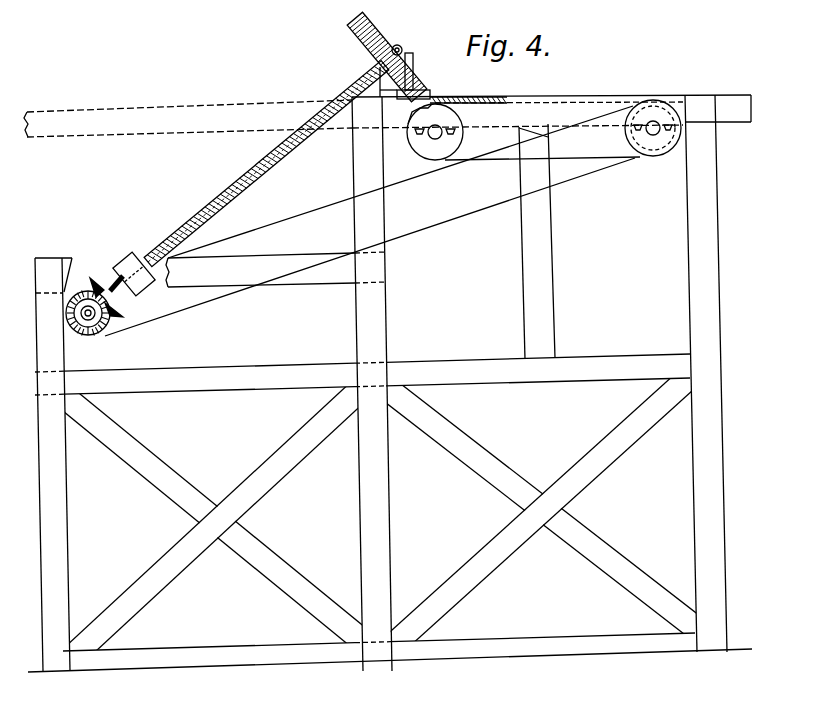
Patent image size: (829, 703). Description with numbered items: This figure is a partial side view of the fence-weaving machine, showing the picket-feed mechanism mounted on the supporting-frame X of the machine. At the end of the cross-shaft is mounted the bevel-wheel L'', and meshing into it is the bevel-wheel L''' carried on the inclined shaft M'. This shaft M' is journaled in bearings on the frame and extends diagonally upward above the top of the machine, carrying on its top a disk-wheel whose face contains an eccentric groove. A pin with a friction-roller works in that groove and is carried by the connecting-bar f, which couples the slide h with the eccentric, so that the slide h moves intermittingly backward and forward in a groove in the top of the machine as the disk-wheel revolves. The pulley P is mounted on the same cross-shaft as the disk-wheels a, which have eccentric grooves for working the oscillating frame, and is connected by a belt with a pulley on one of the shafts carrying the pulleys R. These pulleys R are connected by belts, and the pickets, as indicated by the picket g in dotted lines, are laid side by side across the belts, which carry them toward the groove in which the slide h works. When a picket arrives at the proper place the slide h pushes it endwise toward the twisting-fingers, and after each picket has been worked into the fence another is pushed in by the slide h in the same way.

The frame X is at (390, 386).
The picket g is at (468, 89).
The pulley R is at (458, 142).
The inclined shaft M' is at (266, 164).
The disk-wheel a is at (387, 55).
The connecting-bar f is at (400, 47).
The slide h is at (407, 76).
The pulley P is at (76, 275).
The bevel-wheel L''' is at (122, 284).
The bevel-wheel L'' is at (91, 320).